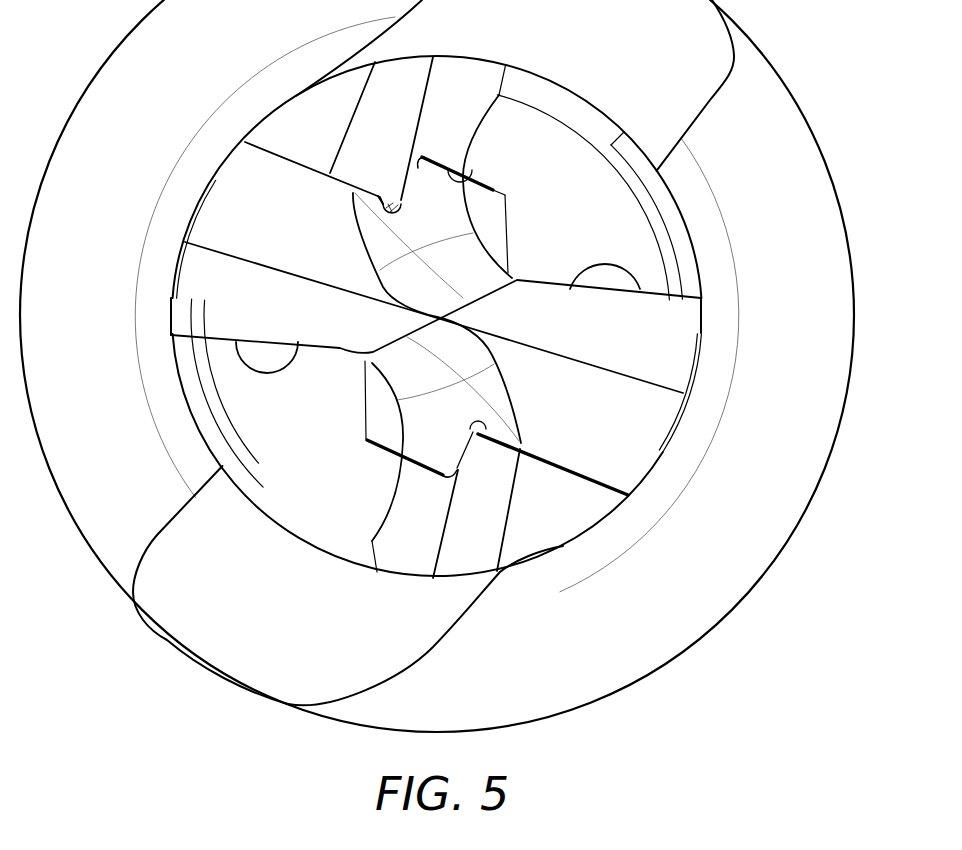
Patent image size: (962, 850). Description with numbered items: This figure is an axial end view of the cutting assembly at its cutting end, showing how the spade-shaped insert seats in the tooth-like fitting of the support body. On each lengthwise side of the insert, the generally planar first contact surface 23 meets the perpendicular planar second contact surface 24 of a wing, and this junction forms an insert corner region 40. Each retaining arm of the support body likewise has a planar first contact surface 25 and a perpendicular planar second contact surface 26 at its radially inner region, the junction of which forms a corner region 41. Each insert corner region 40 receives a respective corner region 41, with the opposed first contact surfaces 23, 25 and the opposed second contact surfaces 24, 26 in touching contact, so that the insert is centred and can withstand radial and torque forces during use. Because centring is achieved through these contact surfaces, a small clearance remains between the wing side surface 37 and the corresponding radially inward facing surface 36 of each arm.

The first contact surface 23 is at (262, 140).
The second contact surface 24 is at (402, 195).
The first contact surface 25 is at (290, 161).
The second contact surface 26 is at (418, 162).
The radially inward facing surface 36 is at (481, 183).
The side surface 37 is at (446, 160).
The corner region 40 is at (378, 231).
The corner region 41 is at (391, 191).